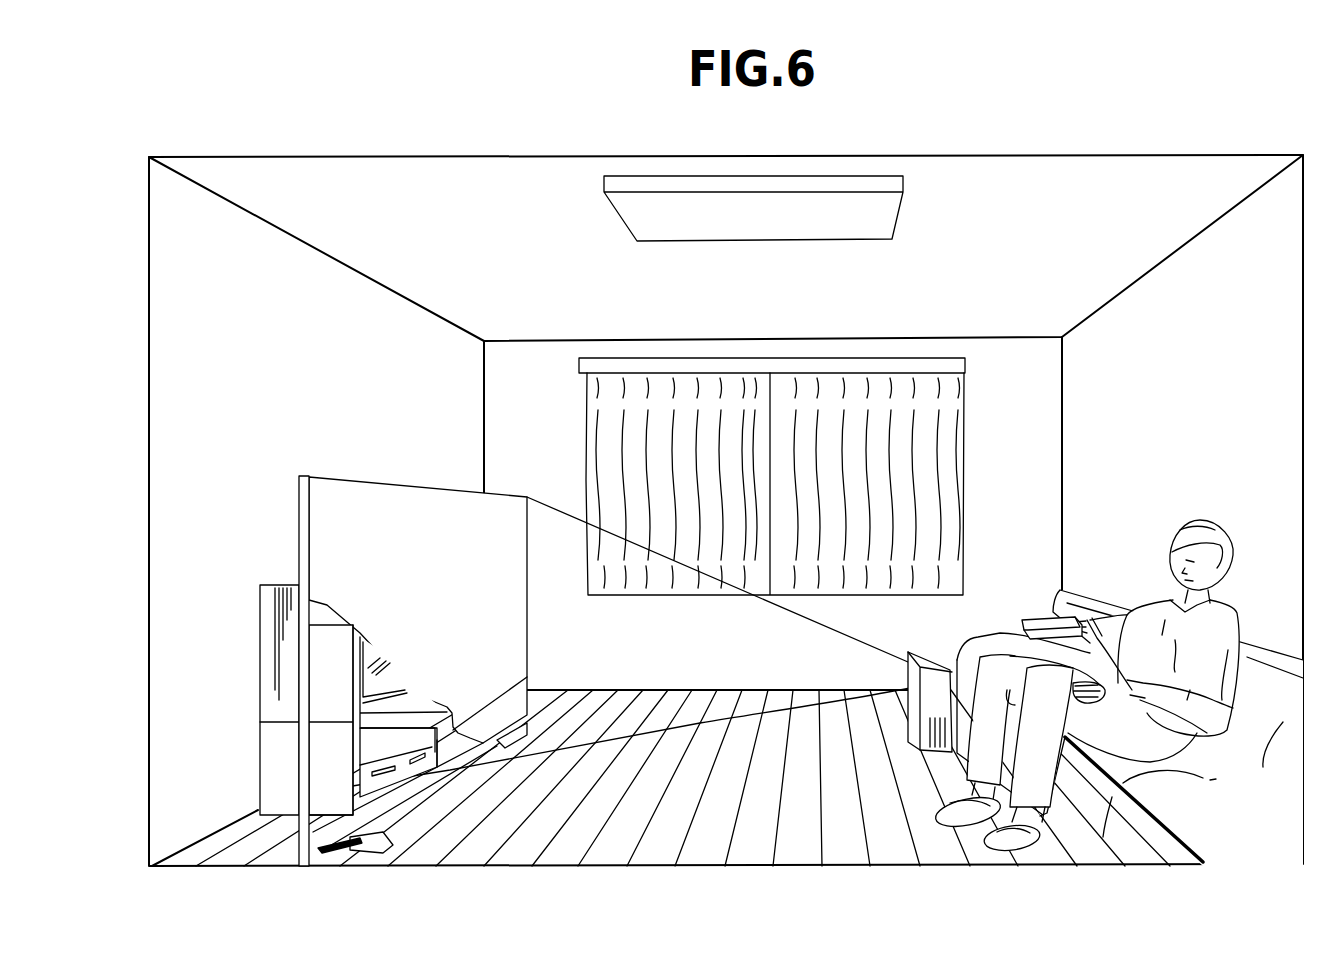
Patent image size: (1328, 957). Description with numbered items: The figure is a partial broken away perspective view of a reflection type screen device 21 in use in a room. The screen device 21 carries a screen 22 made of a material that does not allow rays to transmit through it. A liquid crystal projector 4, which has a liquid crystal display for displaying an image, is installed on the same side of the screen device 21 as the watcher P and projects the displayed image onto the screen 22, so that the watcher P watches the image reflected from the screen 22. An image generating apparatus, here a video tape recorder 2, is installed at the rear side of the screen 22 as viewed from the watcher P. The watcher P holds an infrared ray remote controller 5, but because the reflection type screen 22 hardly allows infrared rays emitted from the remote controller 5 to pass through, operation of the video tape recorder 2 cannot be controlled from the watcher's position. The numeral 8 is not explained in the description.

The screen device 21 is at (343, 466).
The support pole 8 is at (300, 481).
The screen 22 is at (513, 628).
The video tape recorder 2 is at (375, 748).
The liquid crystal projector 4 is at (930, 663).
The infrared ray remote controller 5 is at (1040, 617).
The watcher P is at (1230, 596).